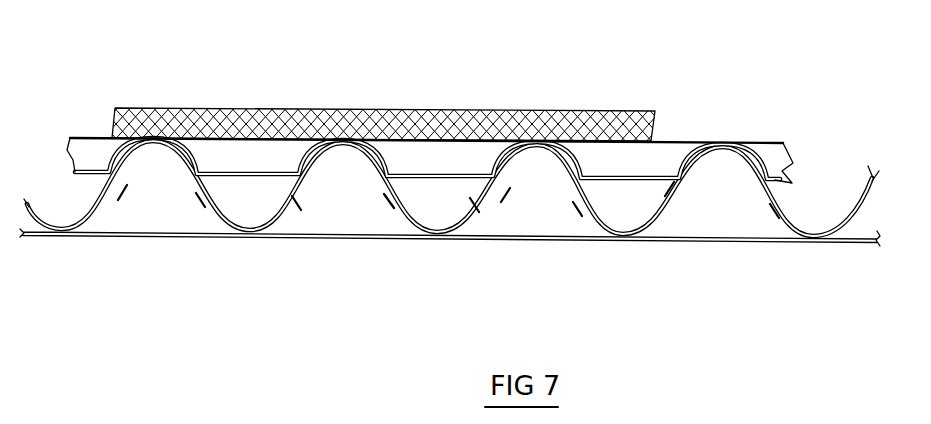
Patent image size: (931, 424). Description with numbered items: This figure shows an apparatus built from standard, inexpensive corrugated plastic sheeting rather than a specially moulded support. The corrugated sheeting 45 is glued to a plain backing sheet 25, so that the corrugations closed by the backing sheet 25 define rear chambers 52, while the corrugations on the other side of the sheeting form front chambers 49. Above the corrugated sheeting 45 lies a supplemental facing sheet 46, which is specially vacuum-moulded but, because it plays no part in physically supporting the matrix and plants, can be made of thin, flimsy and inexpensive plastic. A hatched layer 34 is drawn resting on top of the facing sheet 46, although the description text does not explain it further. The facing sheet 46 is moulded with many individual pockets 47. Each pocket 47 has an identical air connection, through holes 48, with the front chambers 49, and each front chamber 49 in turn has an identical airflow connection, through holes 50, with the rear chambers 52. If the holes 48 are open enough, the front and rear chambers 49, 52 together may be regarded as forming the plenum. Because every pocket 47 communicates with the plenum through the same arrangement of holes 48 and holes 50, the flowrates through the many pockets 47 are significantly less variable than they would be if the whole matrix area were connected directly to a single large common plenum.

The plain backing sheet 25 is at (773, 247).
The hatched top layer 34 is at (635, 110).
The corrugated sheeting 45 is at (794, 221).
The facing sheet 46 is at (670, 157).
The pocket 47 is at (601, 163).
The hole 48 is at (438, 174).
The front chamber 49 is at (620, 208).
The hole 50 is at (390, 200).
The rear chamber 52 is at (153, 210).